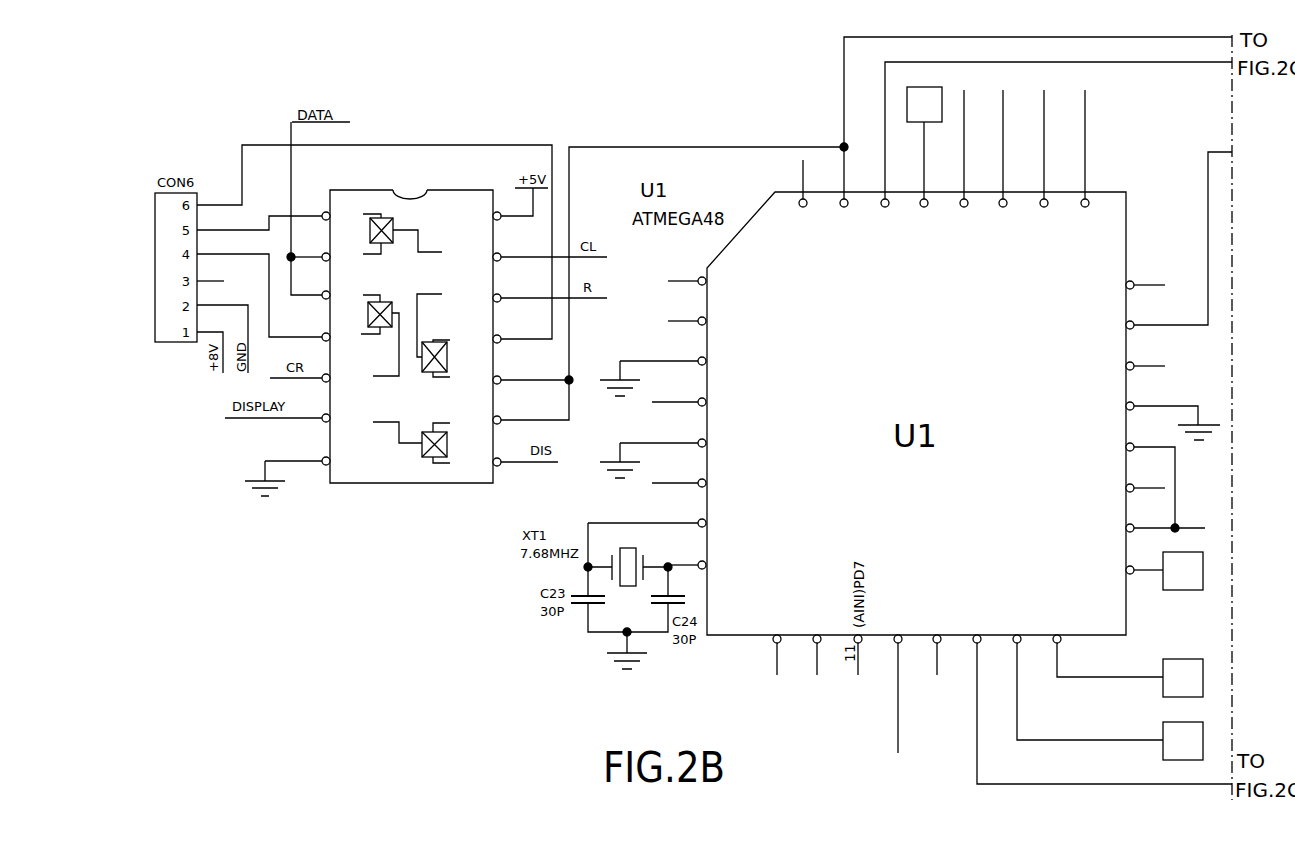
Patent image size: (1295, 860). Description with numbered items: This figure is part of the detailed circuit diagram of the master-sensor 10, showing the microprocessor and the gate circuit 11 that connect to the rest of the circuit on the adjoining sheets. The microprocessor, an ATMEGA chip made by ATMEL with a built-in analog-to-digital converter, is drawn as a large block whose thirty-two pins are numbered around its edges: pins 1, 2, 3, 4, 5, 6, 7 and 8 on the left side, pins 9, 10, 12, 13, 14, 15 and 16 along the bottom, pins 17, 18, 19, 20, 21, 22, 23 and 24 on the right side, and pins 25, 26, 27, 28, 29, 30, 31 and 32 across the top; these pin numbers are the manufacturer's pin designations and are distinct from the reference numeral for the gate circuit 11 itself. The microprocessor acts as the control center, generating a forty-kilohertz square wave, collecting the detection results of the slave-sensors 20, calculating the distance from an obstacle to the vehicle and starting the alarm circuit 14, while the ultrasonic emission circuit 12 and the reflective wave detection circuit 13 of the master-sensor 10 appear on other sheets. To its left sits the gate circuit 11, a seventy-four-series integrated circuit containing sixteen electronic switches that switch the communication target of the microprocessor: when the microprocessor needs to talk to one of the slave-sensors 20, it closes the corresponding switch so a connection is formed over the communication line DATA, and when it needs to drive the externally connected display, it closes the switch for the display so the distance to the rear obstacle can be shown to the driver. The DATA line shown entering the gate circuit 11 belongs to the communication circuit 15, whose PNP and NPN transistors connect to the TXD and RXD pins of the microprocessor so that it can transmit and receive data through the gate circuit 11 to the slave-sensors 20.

The gate circuit 11 is at (412, 478).
The U1 pin 1 (INT1)PD3 1 is at (724, 276).
The U1 pin 2 (XCD/T0)PD4 2 is at (733, 316).
The U1 pin 3 GND 3 is at (672, 370).
The U1 pin 4 VCC 4 is at (696, 397).
The U1 pin 5 GND 5 is at (672, 452).
The U1 pin 6 VCC 6 is at (696, 478).
The U1 pin 7 PB6 7 is at (663, 518).
The U1 pin 8 PB8 8 is at (703, 560).
The U1 pin 9 (TI)PD5 9 is at (773, 625).
The master-sensor 10 is at (813, 614).
The ultrasonic emission circuit 12 is at (894, 660).
The reflective wave detection circuit 13 is at (933, 615).
The alarm circuit 14 is at (1096, 659).
The communication circuit 15 is at (1102, 640).
The U1 pin 16 (MISO)PB4 to CON2 16 is at (1122, 625).
The U1 pin 17 PB6 to CON3 17 is at (1149, 581).
The U1 pin 18 AVCC 18 is at (1146, 523).
The U1 pin 19 ADG8 19 is at (1124, 483).
The slave-sensors 20 is at (1131, 478).
The U1 pin 21 GND 21 is at (1155, 414).
The U1 pin 22 (ADC7) 22 is at (1120, 361).
The U1 pin 23 PC0(ADC0) 23 is at (1140, 242).
The U1 pin 24 PC1(ADC1) 24 is at (1107, 280).
The U1 pin 25 PC2 25 is at (1081, 164).
The U1 pin 26 PC3 26 is at (1040, 164).
The U1 pin 27 PC4(ADC4/SDA) 27 is at (999, 206).
The U1 pin 28 PC5(ADC5/SCL) 28 is at (960, 205).
The U1 pin 29 PC6(RESET) to CON4 29 is at (922, 183).
The U1 pin 30 PD0(RXD) 30 is at (1050, 171).
The U1 pin 31 PD1(TXD) 31 is at (1030, 158).
The U1 pin 32 PD2 32 is at (799, 200).